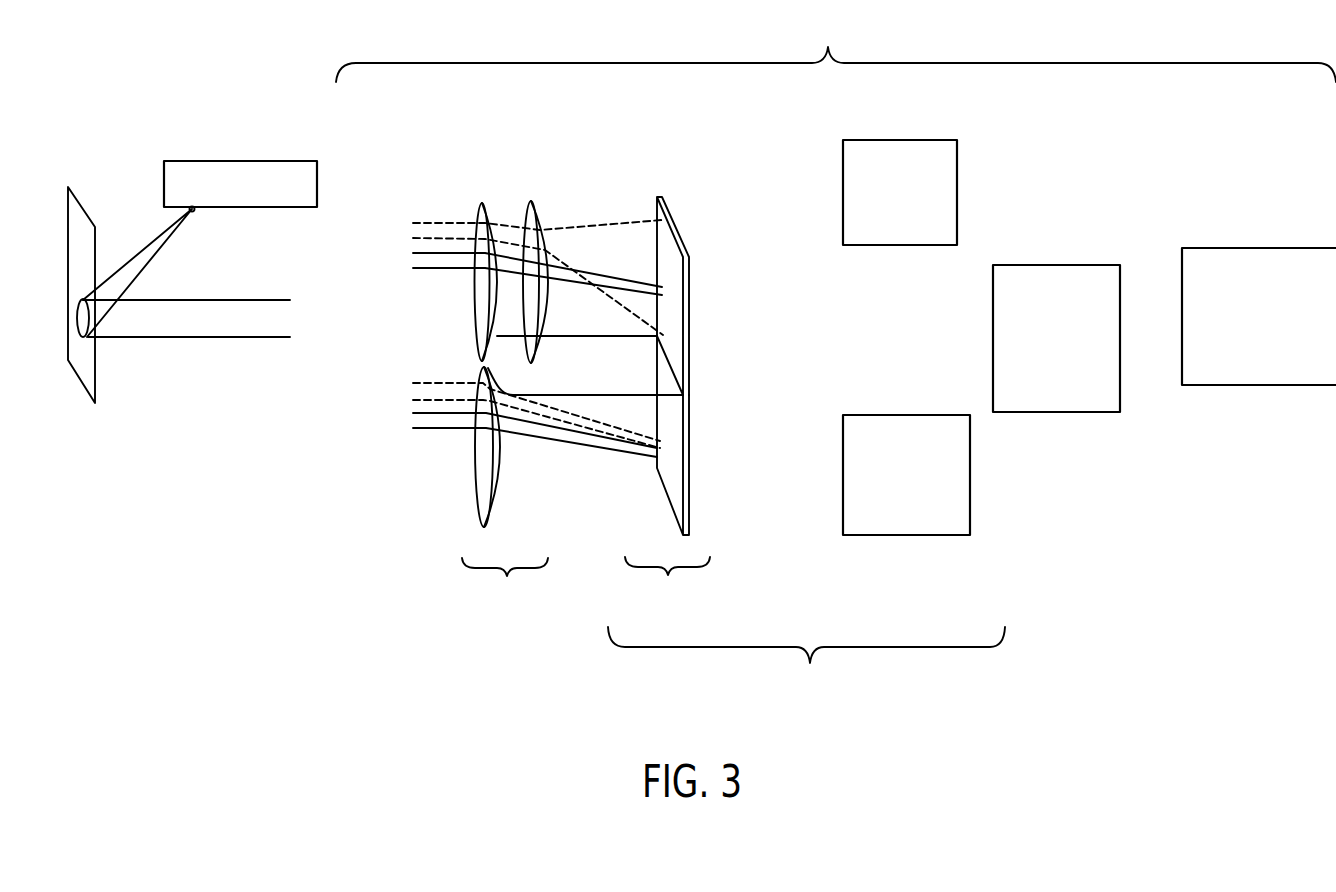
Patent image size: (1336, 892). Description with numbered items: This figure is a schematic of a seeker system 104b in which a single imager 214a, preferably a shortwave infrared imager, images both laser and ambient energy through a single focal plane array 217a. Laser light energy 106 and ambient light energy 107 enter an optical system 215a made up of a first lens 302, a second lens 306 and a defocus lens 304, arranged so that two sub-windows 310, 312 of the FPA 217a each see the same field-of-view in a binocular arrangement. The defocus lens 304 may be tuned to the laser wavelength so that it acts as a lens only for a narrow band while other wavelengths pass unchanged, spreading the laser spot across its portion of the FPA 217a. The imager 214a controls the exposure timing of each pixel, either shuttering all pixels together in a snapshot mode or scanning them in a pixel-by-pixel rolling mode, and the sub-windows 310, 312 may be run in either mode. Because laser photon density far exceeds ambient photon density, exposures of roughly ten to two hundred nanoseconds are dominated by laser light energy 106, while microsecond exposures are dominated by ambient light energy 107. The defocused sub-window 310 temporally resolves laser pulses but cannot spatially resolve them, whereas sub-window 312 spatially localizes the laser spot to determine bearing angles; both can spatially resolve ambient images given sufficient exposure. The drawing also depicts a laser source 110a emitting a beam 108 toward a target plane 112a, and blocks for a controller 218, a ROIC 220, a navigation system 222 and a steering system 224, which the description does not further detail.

The seeker system 104b is at (836, 50).
The laser source 110a is at (240, 160).
The outgoing laser beam 108 is at (127, 268).
The laser light energy 106 is at (183, 330).
The ambient light energy 107 is at (442, 254).
The target plane 112a is at (85, 390).
The first lens 302 is at (487, 203).
The defocus lens 304 is at (537, 203).
The second lens 306 is at (502, 490).
The sub-window 310 is at (676, 279).
The sub-window 312 is at (675, 464).
The optical system 215a is at (505, 582).
The FPA 217a is at (667, 582).
The single imager 214a is at (806, 662).
The controller 218 is at (970, 474).
The read-out integrated circuit (ROIC) 220 is at (902, 245).
The navigation system 222 is at (1058, 412).
The steering system 224 is at (1247, 385).